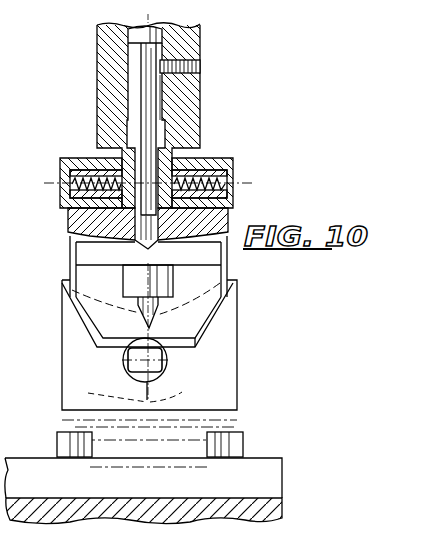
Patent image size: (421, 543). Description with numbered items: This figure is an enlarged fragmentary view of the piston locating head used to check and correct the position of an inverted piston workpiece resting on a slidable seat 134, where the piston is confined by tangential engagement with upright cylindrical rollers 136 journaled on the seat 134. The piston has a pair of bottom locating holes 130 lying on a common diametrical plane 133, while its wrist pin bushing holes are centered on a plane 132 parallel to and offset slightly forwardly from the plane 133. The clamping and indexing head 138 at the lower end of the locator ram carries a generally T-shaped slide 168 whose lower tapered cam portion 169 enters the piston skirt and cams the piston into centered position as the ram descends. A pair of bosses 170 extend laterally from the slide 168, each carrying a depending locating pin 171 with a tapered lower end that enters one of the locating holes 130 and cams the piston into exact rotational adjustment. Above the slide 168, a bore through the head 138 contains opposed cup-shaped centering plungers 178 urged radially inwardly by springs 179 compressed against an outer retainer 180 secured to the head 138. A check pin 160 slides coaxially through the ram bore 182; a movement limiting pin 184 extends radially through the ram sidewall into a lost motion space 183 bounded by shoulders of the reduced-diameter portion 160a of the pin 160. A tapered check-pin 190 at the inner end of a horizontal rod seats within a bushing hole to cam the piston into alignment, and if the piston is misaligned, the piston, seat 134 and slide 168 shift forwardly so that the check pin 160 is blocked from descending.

The portion of reduced diameter 160a is at (141, 58).
The movement limiting pin 184 is at (198, 57).
The bore of ram 182 is at (129, 92).
The lost motion space 183 is at (160, 88).
The check pin 160 is at (143, 135).
The centering plunger 178 is at (85, 167).
The spring 179 is at (62, 184).
The outer retainer 180 is at (229, 180).
The slide 168 is at (78, 224).
The clamping and indexing head 138 is at (238, 219).
The boss 170 is at (173, 273).
The locating hole 130 is at (140, 299).
The locating pin 171 is at (155, 319).
The tapered cam portion 169 is at (214, 321).
The tapered check-pin 190 is at (168, 361).
The plane 132 is at (110, 388).
The common diametrical plane 133 is at (180, 394).
The upright cylindrical roller 136 is at (56, 438).
The seat 134 is at (258, 467).